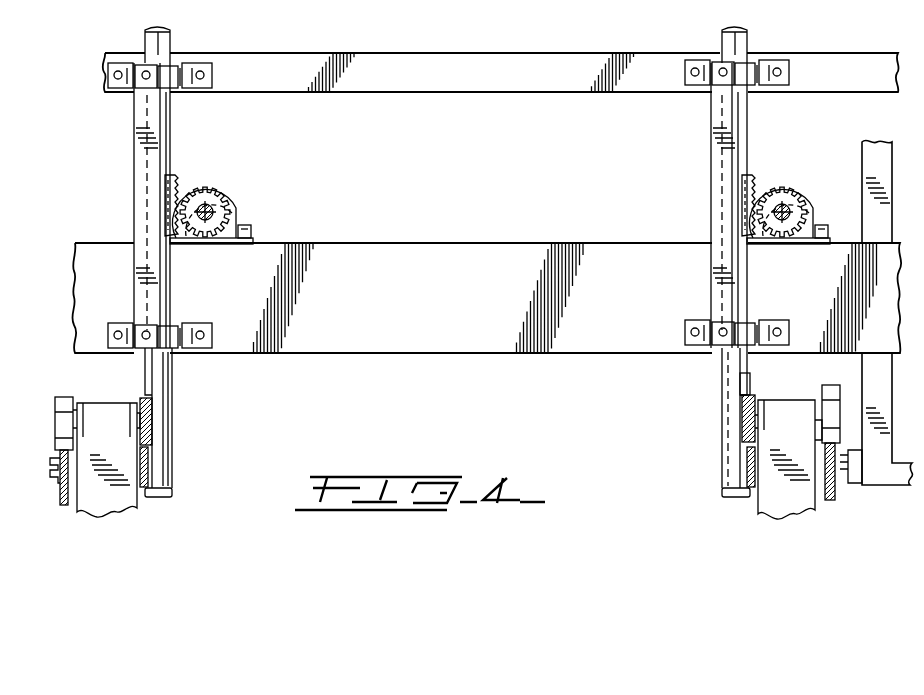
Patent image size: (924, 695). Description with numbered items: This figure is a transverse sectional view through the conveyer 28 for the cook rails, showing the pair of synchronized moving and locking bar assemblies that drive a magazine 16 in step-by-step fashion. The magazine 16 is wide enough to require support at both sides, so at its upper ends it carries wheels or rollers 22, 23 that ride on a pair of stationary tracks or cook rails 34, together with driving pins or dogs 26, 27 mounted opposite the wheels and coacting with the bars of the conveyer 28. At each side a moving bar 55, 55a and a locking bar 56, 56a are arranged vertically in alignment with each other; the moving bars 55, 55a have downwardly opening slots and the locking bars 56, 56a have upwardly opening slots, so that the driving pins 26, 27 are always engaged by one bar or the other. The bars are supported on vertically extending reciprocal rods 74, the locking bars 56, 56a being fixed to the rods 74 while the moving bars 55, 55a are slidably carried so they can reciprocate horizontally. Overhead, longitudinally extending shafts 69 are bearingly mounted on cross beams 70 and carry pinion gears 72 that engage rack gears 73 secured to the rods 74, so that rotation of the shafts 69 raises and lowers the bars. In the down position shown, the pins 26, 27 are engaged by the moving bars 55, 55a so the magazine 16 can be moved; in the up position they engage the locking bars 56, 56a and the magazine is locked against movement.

The magazine 16 is at (822, 507).
The wheel or roller 22 is at (832, 386).
The wheel or roller 23 is at (62, 397).
The driving pin or dog 26 is at (735, 446).
The driving pin or dog 27 is at (160, 457).
The conveyer 28 is at (756, 375).
The stationary tracks or rails (cook rails) 34 is at (64, 505).
The moving bar 55 is at (745, 403).
The moving bar 55a is at (152, 405).
The locking bar 56 is at (750, 488).
The locking bar 56a is at (148, 475).
The longitudinally extending shaft 69 is at (209, 208).
The cross beam 70 is at (477, 262).
The pinion gear 72 is at (196, 196).
The rack gear 73 is at (176, 178).
The vertically extending reciprocal rod 74 is at (163, 283).